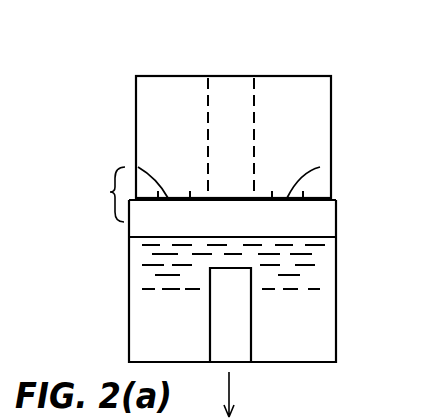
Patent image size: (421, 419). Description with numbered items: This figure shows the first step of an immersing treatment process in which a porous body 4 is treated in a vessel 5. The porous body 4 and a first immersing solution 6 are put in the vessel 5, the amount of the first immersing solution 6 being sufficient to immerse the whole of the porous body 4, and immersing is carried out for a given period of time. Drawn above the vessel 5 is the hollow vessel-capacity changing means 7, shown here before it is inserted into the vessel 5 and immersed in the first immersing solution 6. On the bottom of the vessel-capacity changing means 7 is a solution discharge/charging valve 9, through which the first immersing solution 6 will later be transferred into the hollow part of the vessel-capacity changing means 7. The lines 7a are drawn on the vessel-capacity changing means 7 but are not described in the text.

The porous body 4 is at (237, 353).
The vessel 5 is at (338, 225).
The first immersing solution 6 is at (308, 318).
The vessel-capacity changing means 7 is at (302, 90).
The dividing lines of upper block 7a is at (253, 99).
The solution discharge/charging valve 9 is at (138, 167).